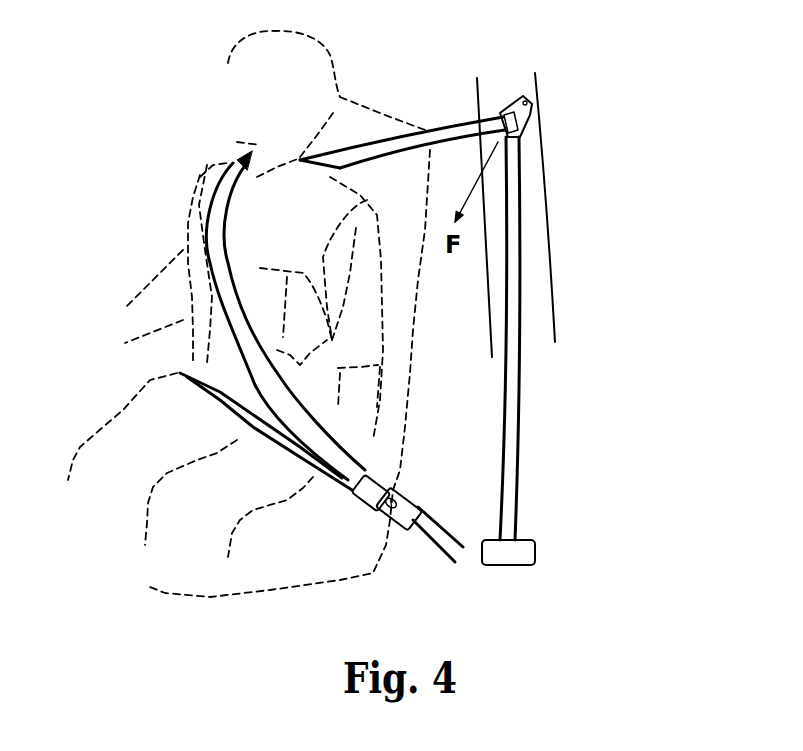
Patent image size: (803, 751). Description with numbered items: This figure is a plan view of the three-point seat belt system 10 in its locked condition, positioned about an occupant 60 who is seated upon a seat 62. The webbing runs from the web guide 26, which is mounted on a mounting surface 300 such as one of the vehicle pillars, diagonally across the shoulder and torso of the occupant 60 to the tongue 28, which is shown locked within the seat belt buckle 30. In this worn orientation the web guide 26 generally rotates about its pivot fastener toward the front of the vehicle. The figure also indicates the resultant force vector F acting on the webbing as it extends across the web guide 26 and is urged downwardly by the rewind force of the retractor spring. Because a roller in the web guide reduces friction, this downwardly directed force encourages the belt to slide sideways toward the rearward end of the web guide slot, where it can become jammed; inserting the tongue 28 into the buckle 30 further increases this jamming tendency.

The seat belt system 10 is at (446, 100).
The web guide 26 is at (508, 98).
The tongue 28 is at (377, 480).
The seat belt buckle 30 is at (413, 510).
The occupant 60 is at (332, 72).
The seat 62 is at (407, 278).
The mounting surface 300 is at (542, 165).